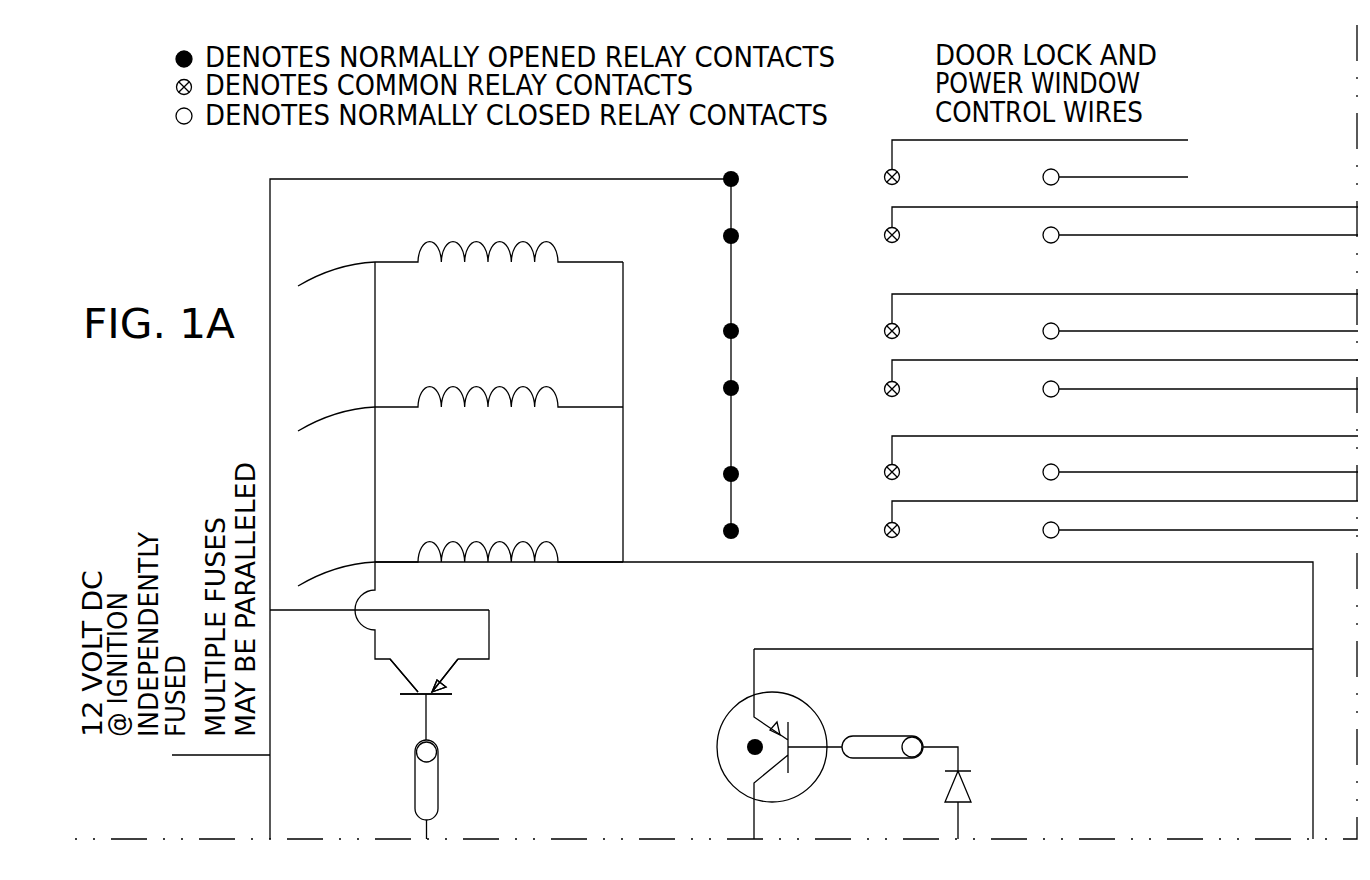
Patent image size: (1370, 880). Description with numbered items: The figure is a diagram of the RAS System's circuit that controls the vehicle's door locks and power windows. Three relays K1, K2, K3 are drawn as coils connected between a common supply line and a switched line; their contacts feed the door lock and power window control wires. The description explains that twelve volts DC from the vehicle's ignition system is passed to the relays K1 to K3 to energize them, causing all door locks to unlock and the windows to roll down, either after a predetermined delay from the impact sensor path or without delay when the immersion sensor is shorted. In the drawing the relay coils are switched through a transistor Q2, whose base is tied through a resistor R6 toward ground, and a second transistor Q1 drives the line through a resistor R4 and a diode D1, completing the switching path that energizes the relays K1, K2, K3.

The relay K1 is at (460, 259).
The relay K2 is at (460, 403).
The relay K3 is at (460, 557).
The transistor Q1 is at (759, 744).
The transistor Q2 is at (452, 699).
The resistor R4 is at (900, 733).
The resistor R6 is at (449, 789).
The diode D1 is at (983, 805).